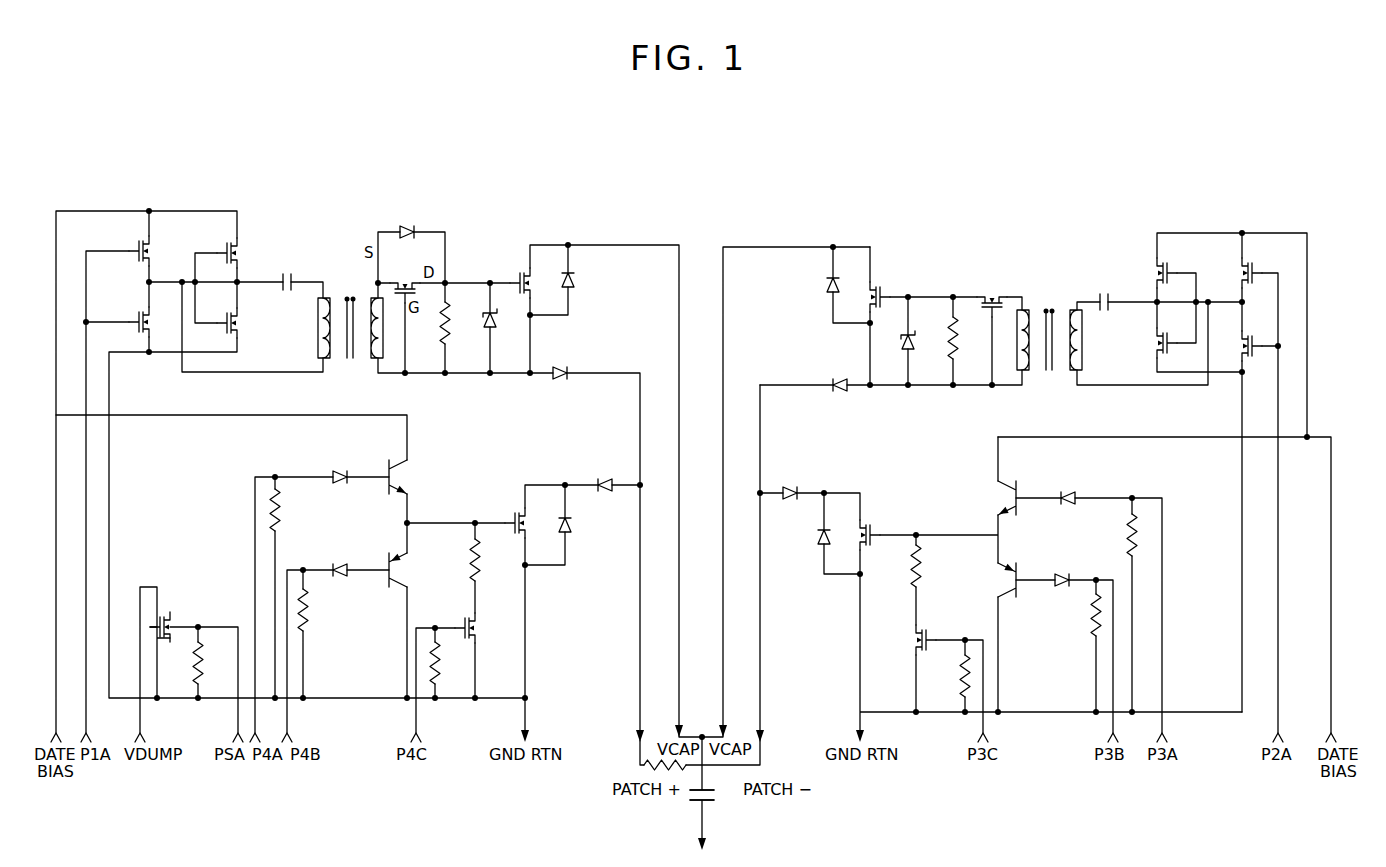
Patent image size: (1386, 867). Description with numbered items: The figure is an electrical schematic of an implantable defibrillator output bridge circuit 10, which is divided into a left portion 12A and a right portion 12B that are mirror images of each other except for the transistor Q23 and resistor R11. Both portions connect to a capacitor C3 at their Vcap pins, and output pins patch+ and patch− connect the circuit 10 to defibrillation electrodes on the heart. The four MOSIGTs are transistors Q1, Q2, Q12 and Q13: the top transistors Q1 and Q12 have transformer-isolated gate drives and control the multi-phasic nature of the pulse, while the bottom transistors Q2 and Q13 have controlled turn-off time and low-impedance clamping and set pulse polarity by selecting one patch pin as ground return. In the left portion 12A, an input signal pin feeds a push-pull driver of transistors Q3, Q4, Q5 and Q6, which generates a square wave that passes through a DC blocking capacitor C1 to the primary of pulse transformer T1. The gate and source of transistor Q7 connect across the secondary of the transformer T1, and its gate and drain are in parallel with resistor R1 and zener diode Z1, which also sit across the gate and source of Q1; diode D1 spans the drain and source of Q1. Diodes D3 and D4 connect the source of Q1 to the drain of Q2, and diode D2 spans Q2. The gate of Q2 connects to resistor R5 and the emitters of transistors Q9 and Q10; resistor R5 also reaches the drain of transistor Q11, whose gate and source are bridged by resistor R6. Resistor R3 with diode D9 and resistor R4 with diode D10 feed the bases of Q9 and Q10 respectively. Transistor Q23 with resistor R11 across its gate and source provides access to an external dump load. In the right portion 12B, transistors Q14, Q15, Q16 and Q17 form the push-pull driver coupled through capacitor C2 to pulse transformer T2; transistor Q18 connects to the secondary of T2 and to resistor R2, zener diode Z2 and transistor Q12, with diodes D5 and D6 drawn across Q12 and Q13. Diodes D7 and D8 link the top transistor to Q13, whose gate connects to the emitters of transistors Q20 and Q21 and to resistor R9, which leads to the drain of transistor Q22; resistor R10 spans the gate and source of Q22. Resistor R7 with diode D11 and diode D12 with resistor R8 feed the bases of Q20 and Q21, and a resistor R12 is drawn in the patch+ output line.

The implantable defibrillator output bridge circuit 10 is at (883, 198).
The left circuit portion 12A is at (358, 222).
The right circuit portion 12B is at (1063, 262).
The top transistor Q1 is at (534, 277).
The bottom transistor Q2 is at (529, 517).
The push-pull driver transistor Q3 is at (157, 245).
The push-pull driver transistor Q4 is at (154, 320).
The push-pull driver transistor Q5 is at (243, 246).
The push-pull driver transistor Q6 is at (244, 322).
The transistor Q7 is at (404, 264).
The transistor Q9 is at (408, 478).
The transistor Q10 is at (414, 570).
The transistor Q11 is at (486, 626).
The top transistor Q12 is at (891, 286).
The bottom transistor Q13 is at (880, 526).
The push-pull driver transistor Q14 is at (1265, 266).
The push-pull driver transistor Q15 is at (1263, 338).
The push-pull driver transistor Q16 is at (1181, 266).
The push-pull driver transistor Q17 is at (1147, 352).
The transistor Q18 is at (982, 295).
The transistor Q20 is at (990, 499).
The transistor Q21 is at (991, 580).
The transistor Q22 is at (905, 633).
The transistor Q23 is at (176, 619).
The resistor R1 is at (460, 320).
The resistor R2 is at (968, 338).
The resistor R3 is at (291, 510).
The resistor R4 is at (319, 610).
The resistor R5 is at (492, 560).
The resistor R6 is at (450, 663).
The resistor R7 is at (1116, 535).
The resistor R8 is at (1079, 615).
The resistor R9 is at (899, 566).
The resistor R10 is at (947, 676).
The resistor R11 is at (218, 663).
The patch resistor R12 is at (665, 765).
The diode D1 is at (585, 284).
The diode D2 is at (583, 530).
The diode D3 is at (562, 389).
The diode D4 is at (607, 472).
The diode D5 is at (819, 282).
The diode D6 is at (808, 532).
The diode D7 is at (839, 400).
The diode D8 is at (792, 480).
The diode D9 is at (339, 464).
The diode D10 is at (344, 560).
The diode D11 is at (1074, 485).
The diode D12 is at (1067, 565).
The zener diode Z1 is at (505, 323).
The zener diode Z2 is at (898, 334).
The DC blocking capacitor C1 is at (291, 271).
The DC blocking capacitor C2 is at (1105, 290).
The capacitor C3 is at (715, 805).
The pulse transformer T1 is at (350, 312).
The pulse transformer T2 is at (1049, 326).